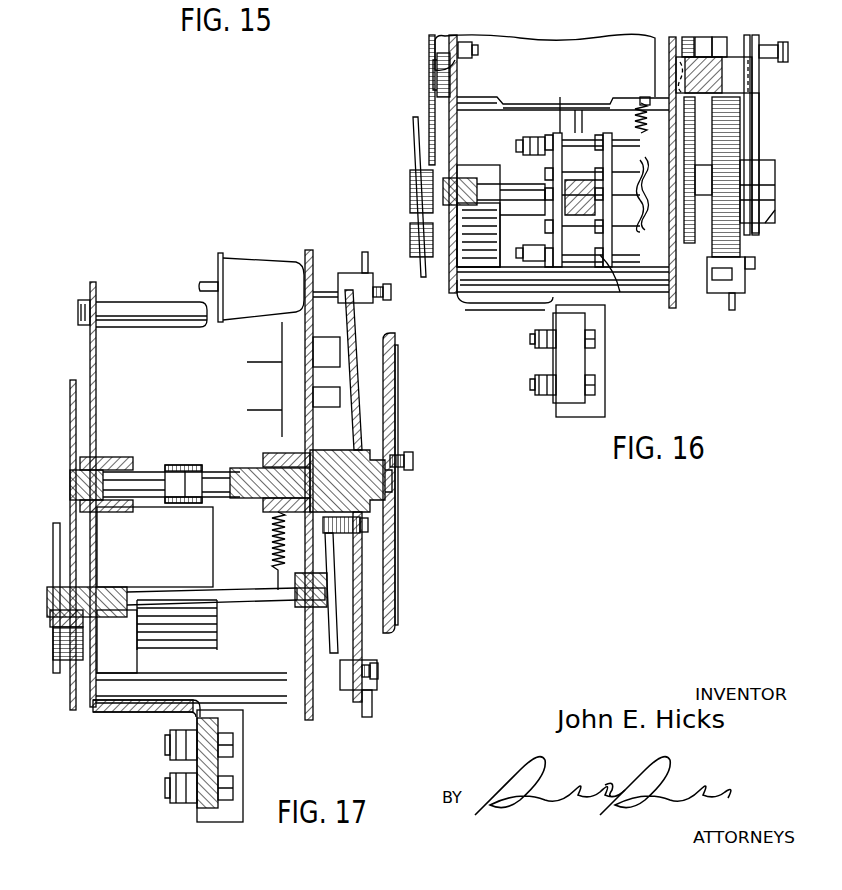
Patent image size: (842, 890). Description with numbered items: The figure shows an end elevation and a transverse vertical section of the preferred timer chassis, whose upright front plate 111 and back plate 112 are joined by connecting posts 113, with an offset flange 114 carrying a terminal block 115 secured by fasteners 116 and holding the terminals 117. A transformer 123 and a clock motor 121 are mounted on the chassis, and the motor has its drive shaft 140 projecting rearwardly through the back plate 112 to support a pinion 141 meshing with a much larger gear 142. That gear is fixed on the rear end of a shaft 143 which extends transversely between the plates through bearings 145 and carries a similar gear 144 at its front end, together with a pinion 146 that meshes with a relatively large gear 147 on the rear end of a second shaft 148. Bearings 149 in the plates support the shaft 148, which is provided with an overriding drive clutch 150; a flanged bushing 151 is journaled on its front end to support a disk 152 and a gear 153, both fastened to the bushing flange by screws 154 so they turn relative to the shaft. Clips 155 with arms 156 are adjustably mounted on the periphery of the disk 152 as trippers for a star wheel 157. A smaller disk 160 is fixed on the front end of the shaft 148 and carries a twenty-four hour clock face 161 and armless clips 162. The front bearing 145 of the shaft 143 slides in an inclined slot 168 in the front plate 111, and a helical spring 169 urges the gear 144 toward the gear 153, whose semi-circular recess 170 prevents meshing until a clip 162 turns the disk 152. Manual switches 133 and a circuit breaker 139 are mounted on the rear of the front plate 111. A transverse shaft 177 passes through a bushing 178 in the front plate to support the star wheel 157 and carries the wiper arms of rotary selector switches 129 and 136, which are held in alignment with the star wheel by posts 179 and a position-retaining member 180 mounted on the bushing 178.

In FIG. 16, the front plate 111 is at (676, 305).
In FIG. 17, the front plate 111 is at (309, 250).
In FIG. 16, the back plate 112 is at (455, 118).
In FIG. 17, the back plate 112 is at (96, 380).
In FIG. 16, the connecting posts 113 is at (457, 292).
In FIG. 17, the connecting posts 113 is at (138, 280).
In FIG. 16, the offset flange 114 is at (553, 361).
In FIG. 17, the offset flange 114 is at (192, 768).
In FIG. 16, the terminal block 115 is at (605, 366).
In FIG. 17, the terminal block 115 is at (212, 822).
In FIG. 16, the fasteners 116 is at (532, 388).
In FIG. 17, the terminals 117 is at (218, 770).
In FIG. 16, the clock motor 121 is at (500, 140).
In FIG. 17, the clock motor 121 is at (180, 648).
In FIG. 16, the transformer 123 is at (583, 36).
In FIG. 16, the rotary selector switch 129 is at (623, 284).
In FIG. 17, the manual switches 133 is at (274, 392).
In FIG. 16, the rotary selector switch 136 is at (553, 133).
In FIG. 17, the circuit breaker 139 is at (256, 257).
In FIG. 16, the drive shaft 140 is at (457, 236).
In FIG. 17, the drive shaft 140 is at (90, 644).
In FIG. 16, the pinion 141 is at (410, 243).
In FIG. 17, the pinion 141 is at (53, 637).
In FIG. 16, the gear 142 is at (411, 142).
In FIG. 17, the gear 142 is at (55, 546).
In FIG. 16, the shaft 143 is at (490, 184).
In FIG. 17, the shaft 143 is at (241, 590).
In FIG. 16, the gear 144 is at (690, 155).
In FIG. 17, the gear 144 is at (345, 650).
In FIG. 16, the bearings 145 is at (462, 205).
In FIG. 17, the bearings 145 is at (100, 617).
In FIG. 16, the pinion 146 is at (414, 180).
In FIG. 17, the pinion 146 is at (60, 622).
In FIG. 16, the gear 147 is at (429, 50).
In FIG. 17, the gear 147 is at (70, 404).
In FIG. 17, the shaft 148 is at (234, 458).
In FIG. 16, the bearings 149 is at (437, 75).
In FIG. 17, the bearings 149 is at (102, 450).
In FIG. 17, the overriding drive clutch 150 is at (185, 462).
In FIG. 17, the flanged bushing 151 is at (396, 495).
In FIG. 16, the disk 152 is at (724, 37).
In FIG. 17, the disk 152 is at (360, 328).
In FIG. 16, the gear 153 is at (688, 37).
In FIG. 17, the screws 154 is at (368, 526).
In FIG. 16, the clips 155 is at (740, 292).
In FIG. 17, the clips 155 is at (377, 688).
In FIG. 17, the arms 156 is at (372, 706).
In FIG. 16, the star wheel 157 is at (704, 37).
In FIG. 16, the disk 160 is at (752, 118).
In FIG. 17, the disk 160 is at (395, 340).
In FIG. 17, the clock face 161 is at (398, 368).
In FIG. 16, the clips 162 is at (770, 35).
In FIG. 17, the clips 162 is at (408, 452).
In FIG. 17, the slot 168 is at (315, 607).
In FIG. 16, the helical spring 169 is at (636, 118).
In FIG. 17, the helical spring 169 is at (272, 530).
In FIG. 17, the recess 170 is at (333, 551).
In FIG. 16, the transverse shaft 177 is at (705, 197).
In FIG. 16, the bushing 178 is at (666, 240).
In FIG. 16, the posts 179 is at (592, 100).
In FIG. 16, the position-retaining member 180 is at (646, 166).